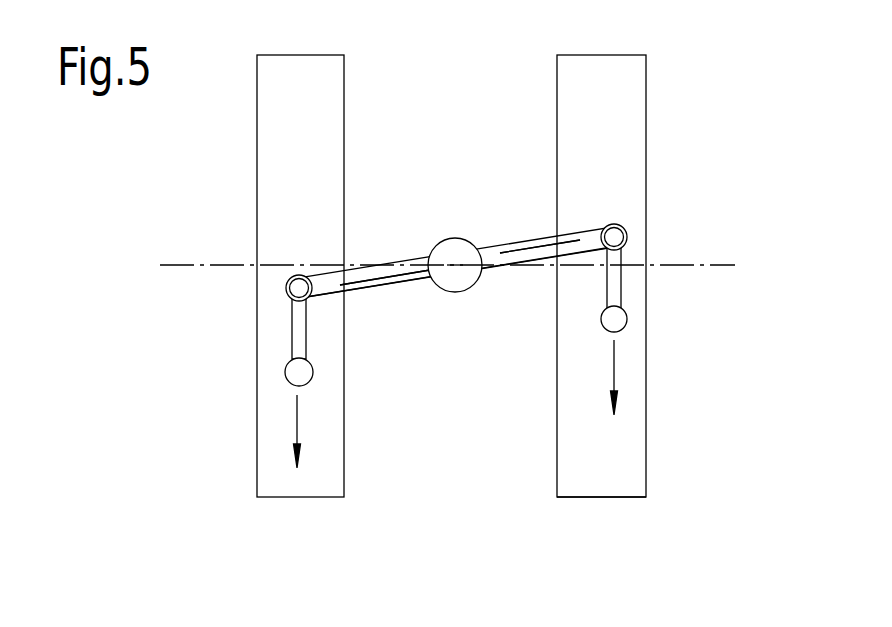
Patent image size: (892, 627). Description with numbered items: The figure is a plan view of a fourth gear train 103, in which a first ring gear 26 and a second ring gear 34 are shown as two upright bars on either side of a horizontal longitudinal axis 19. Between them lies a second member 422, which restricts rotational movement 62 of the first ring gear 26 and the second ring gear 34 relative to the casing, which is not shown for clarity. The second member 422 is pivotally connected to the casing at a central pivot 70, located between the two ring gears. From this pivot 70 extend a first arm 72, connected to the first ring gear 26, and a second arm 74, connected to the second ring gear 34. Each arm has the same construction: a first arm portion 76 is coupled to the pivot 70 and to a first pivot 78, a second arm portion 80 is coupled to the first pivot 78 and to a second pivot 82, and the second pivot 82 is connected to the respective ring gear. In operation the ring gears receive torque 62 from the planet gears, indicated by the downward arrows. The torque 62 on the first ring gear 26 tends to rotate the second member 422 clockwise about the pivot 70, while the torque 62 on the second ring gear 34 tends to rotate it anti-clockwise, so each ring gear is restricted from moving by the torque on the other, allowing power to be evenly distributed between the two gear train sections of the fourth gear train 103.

The longitudinal axis 19 is at (198, 262).
The first ring gear 26 is at (640, 87).
The second ring gear 34 is at (264, 120).
The second member 422 is at (435, 194).
The first arm 72 is at (509, 213).
The first arm portion 76 is at (388, 278).
The first pivot 78 is at (297, 285).
The second arm portion 80 is at (298, 337).
The second pivot 82 is at (292, 373).
The pivot 70 is at (450, 294).
The second arm 74 is at (376, 328).
The torque 62 is at (298, 414).
The fourth gear train 103 is at (672, 536).